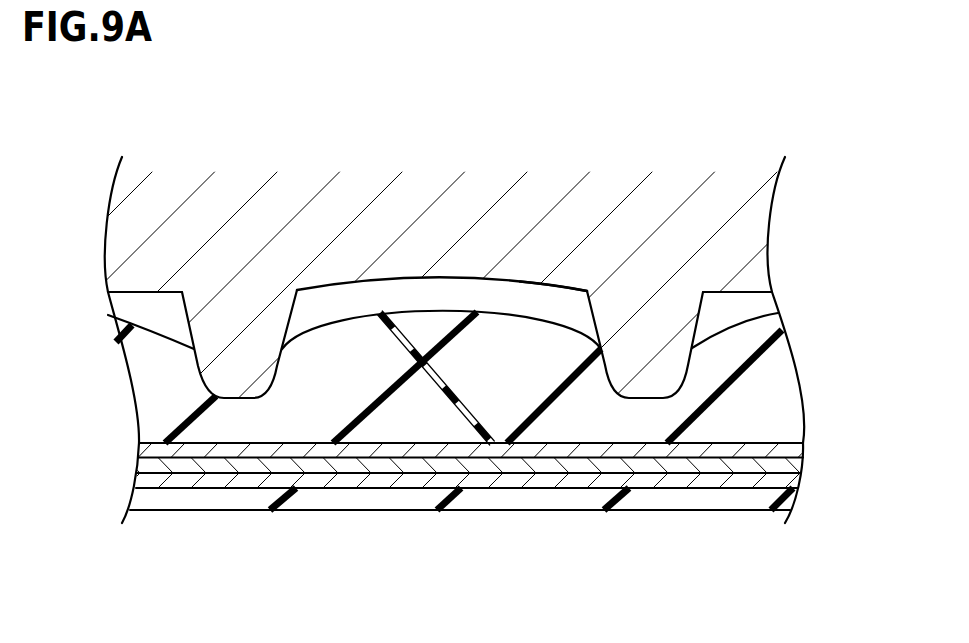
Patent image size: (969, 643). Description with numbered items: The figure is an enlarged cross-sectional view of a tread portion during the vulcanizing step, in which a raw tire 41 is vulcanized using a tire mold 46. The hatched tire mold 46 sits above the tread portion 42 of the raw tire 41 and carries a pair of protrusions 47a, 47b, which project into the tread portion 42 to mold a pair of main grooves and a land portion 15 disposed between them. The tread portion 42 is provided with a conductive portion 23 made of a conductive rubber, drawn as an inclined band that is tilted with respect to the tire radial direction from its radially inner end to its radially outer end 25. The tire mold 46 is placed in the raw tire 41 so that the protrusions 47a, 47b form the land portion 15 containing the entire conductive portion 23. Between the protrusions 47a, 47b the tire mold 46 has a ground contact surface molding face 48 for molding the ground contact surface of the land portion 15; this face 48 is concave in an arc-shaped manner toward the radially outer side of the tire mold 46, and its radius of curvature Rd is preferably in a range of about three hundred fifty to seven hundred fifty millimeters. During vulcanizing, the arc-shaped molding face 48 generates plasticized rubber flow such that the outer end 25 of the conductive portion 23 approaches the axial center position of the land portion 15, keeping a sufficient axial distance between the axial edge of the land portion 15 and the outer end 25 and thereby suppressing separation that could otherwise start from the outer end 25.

The land portion 15 is at (442, 307).
The conductive portion 23 is at (468, 405).
The outer end 25 is at (375, 322).
The raw tire 41 is at (757, 407).
The tread portion 42 is at (165, 375).
The tire mold 46 is at (740, 238).
The protrusion 47a is at (247, 362).
The protrusion 47b is at (648, 378).
The ground contact surface molding face 48 is at (532, 297).
The radius of curvature Rd is at (332, 286).